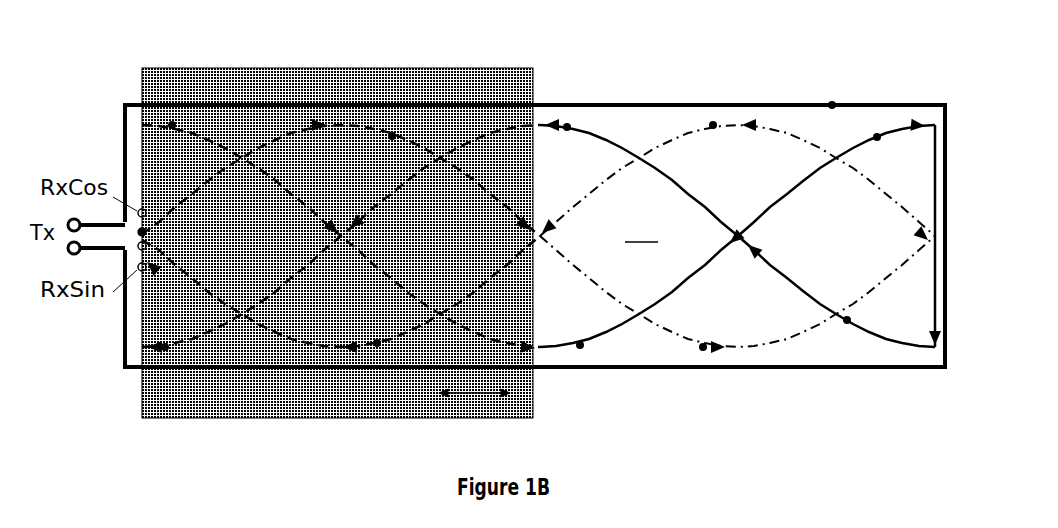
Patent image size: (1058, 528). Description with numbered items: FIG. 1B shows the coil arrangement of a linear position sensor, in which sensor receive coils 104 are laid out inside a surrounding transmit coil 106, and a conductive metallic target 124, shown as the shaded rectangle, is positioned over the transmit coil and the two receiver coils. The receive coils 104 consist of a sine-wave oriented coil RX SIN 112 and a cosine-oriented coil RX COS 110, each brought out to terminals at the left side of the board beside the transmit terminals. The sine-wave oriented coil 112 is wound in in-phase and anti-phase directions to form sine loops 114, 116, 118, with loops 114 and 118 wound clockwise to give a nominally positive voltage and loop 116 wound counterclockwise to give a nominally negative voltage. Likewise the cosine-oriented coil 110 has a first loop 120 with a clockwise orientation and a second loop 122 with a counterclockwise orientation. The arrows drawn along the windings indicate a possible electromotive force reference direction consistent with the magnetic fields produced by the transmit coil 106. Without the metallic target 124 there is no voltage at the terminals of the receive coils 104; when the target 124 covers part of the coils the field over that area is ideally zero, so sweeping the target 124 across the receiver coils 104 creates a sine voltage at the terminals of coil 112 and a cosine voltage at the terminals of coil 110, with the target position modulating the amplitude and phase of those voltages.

The receive coils 104 is at (641, 231).
The transmit coil 106 is at (834, 106).
The cosine-oriented coil RX COS 110 is at (683, 228).
The sine-wave oriented coil RX SIN 112 is at (350, 242).
The sine loop 114 is at (172, 125).
The sine loop 116 is at (567, 127).
The sine loop 118 is at (877, 137).
The first loop 120 is at (377, 343).
The second loop 122 is at (703, 347).
The metallic target 124 is at (212, 85).